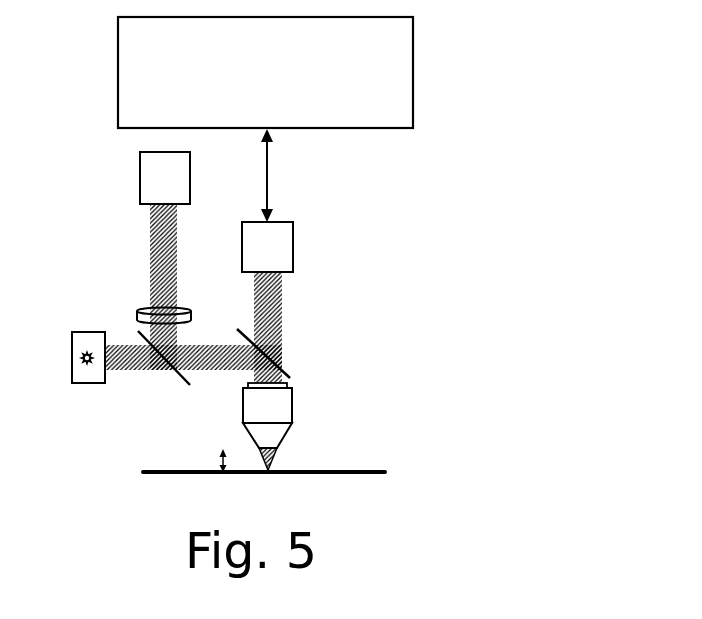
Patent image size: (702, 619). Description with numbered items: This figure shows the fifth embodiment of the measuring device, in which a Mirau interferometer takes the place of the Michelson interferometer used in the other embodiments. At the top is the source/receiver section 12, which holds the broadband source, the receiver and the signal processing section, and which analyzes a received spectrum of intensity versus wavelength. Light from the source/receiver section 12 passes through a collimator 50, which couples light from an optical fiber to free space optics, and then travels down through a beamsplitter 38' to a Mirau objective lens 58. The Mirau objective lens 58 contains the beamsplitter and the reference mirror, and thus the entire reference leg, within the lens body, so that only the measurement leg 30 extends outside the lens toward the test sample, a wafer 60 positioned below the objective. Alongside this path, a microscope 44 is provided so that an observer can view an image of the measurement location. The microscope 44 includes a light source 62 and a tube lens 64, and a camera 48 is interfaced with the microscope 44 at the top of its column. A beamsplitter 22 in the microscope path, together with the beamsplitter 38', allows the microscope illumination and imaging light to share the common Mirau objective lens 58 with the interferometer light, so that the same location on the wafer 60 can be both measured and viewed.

The source/receiver section 12 is at (265, 72).
The camera 48 is at (140, 184).
The microscope 44 is at (163, 258).
The tube lens 64 is at (140, 307).
The light source 62 is at (74, 357).
The beamsplitter 22 is at (189, 386).
The beamsplitter 38' is at (312, 357).
The collimator 50 is at (294, 255).
The Mirau objective lens 58 is at (268, 413).
The measurement leg 30 is at (218, 457).
The wafer 60 is at (297, 470).